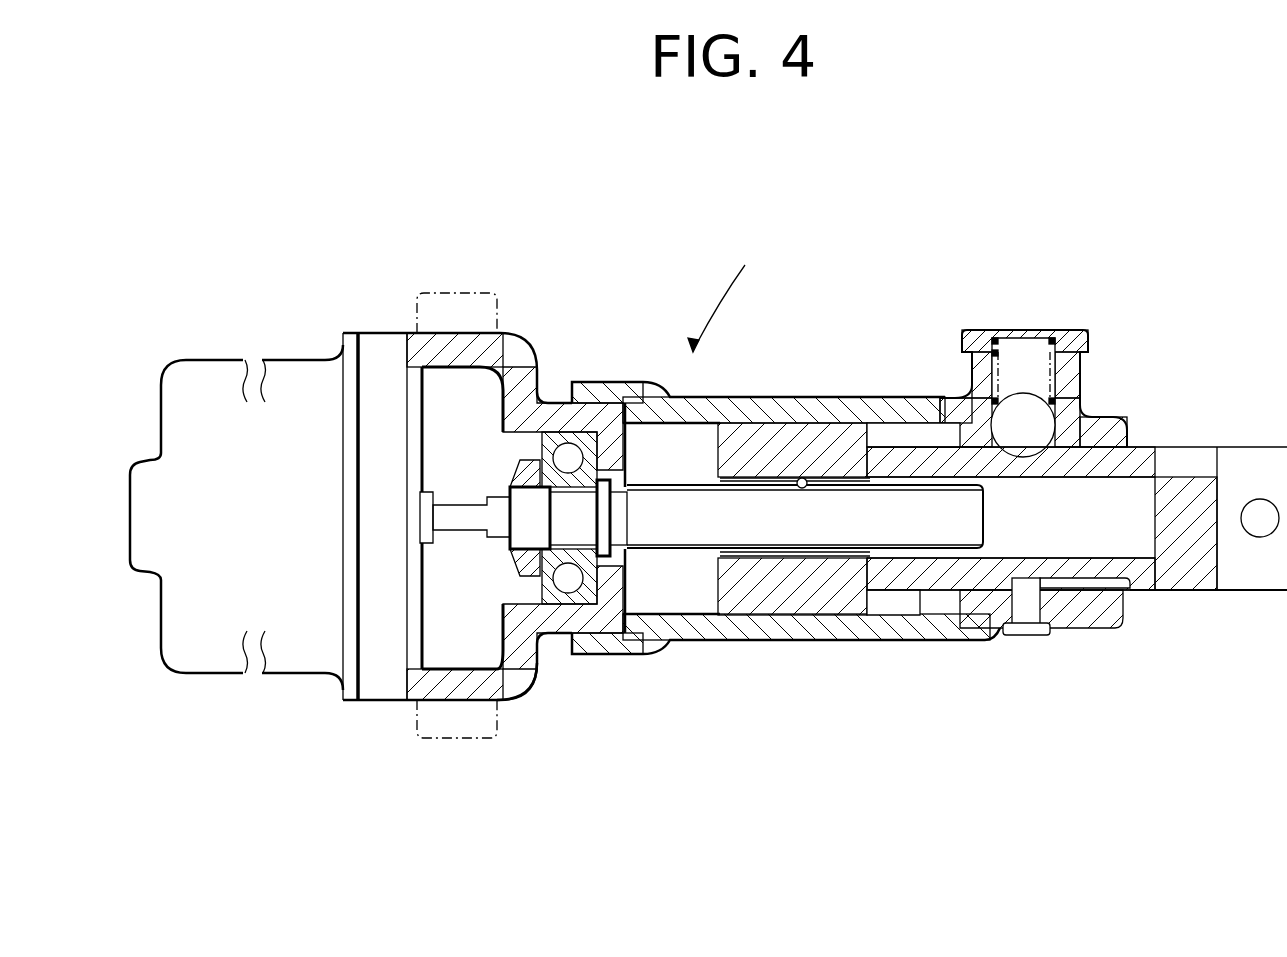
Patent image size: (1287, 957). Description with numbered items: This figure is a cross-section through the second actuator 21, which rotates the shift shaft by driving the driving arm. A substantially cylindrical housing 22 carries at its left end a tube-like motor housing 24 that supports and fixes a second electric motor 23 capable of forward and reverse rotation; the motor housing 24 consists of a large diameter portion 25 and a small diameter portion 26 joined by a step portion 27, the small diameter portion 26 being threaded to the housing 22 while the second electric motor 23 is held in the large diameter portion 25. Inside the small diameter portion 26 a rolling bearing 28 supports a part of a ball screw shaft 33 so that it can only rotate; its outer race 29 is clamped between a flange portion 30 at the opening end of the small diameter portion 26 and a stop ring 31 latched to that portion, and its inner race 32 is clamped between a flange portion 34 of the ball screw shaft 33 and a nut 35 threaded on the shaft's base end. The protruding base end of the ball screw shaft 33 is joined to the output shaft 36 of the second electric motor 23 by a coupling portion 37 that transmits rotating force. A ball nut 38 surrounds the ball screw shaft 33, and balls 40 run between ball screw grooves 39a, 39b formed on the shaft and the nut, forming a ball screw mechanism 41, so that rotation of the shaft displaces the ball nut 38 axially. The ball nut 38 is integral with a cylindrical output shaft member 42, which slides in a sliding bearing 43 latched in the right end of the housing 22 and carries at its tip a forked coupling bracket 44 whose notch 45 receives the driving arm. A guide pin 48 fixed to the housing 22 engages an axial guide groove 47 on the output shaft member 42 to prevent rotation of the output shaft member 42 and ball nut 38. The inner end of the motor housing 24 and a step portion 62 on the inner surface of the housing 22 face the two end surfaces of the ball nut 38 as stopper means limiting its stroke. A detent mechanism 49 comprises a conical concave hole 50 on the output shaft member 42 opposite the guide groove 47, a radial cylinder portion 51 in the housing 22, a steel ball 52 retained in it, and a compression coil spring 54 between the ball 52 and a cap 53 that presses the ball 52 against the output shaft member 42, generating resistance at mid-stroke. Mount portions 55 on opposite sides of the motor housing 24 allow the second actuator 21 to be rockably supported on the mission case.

The second actuator 21 is at (728, 285).
The housing 22 is at (1055, 656).
The second electric motor 23 is at (305, 677).
The motor housing 24 is at (483, 516).
The large diameter portion 25 is at (432, 690).
The small diameter portion 26 is at (578, 617).
The step portion 27 is at (518, 697).
The rolling bearing 28 is at (560, 585).
The outer race 29 is at (567, 430).
The flange portion 30 is at (600, 565).
The stop ring 31 is at (517, 560).
The inner race 32 is at (425, 450).
The ball screw shaft 33 is at (767, 533).
The flange portion 34 is at (645, 488).
The nut 35 is at (307, 677).
The output shaft 36 is at (455, 492).
The coupling portion 37 is at (470, 520).
The ball nut 38 is at (786, 481).
The ball screw groove 39a is at (943, 497).
The ball screw groove 39b is at (903, 497).
The balls 40 is at (802, 490).
The ball screw mechanism 41 is at (820, 493).
The output shaft member 42 is at (1077, 499).
The sliding bearing 43 is at (1108, 440).
The coupling bracket 44 is at (1245, 455).
The notch 45 is at (1217, 567).
The guide groove 47 is at (1107, 580).
The guide pin 48 is at (1033, 607).
The detent mechanism 49 is at (1037, 378).
The concave hole 50 is at (1075, 385).
The cylinder portion 51 is at (975, 327).
The ball 52 is at (1013, 452).
The cap 53 is at (1022, 403).
The compression coil spring 54 is at (1005, 330).
The mount portions 55 is at (450, 293).
The step portion 62 is at (945, 418).